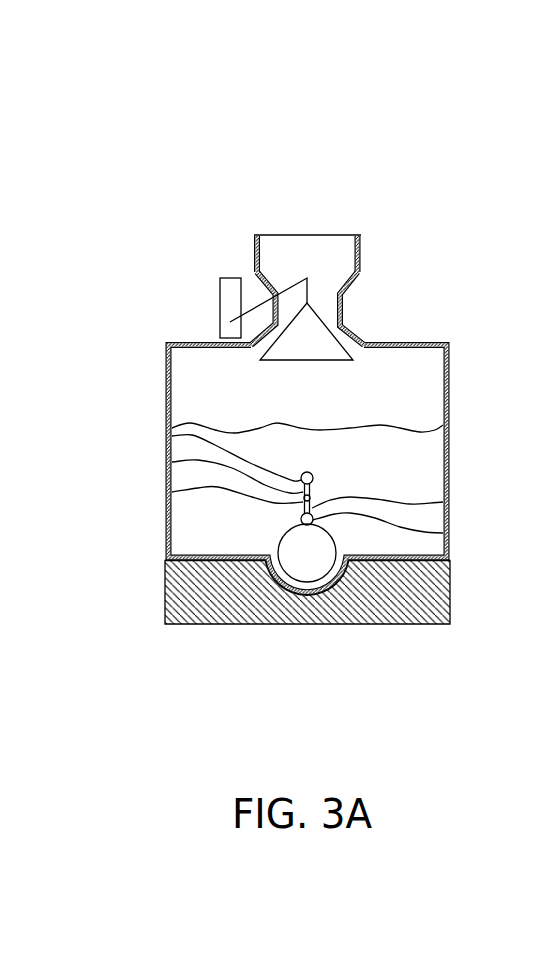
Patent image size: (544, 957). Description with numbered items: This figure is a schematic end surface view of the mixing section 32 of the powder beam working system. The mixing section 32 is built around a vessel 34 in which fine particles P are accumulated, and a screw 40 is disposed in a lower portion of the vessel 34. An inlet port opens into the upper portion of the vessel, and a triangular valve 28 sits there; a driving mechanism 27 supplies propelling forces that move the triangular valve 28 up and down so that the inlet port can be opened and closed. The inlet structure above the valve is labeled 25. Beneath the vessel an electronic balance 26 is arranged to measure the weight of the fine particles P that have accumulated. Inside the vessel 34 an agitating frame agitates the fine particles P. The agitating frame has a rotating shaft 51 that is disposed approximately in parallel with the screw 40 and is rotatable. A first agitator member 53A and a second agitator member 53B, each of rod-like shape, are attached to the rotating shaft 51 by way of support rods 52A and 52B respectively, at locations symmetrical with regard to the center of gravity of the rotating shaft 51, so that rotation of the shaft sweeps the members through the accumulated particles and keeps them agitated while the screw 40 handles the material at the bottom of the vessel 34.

The inlet tube 25 is at (362, 246).
The electronic balance 26 is at (412, 626).
The driving mechanism 27 is at (218, 301).
The triangular valve 28 is at (345, 321).
The mixing section 32 is at (180, 648).
The vessel 34 is at (452, 352).
The screw 40 is at (302, 572).
The rotating shaft 51 is at (172, 492).
The support rod 52A is at (172, 462).
The support rod 52B is at (443, 502).
The first agitator member 53A is at (172, 436).
The second agitator member 53B is at (443, 533).
The fine particles P is at (420, 455).